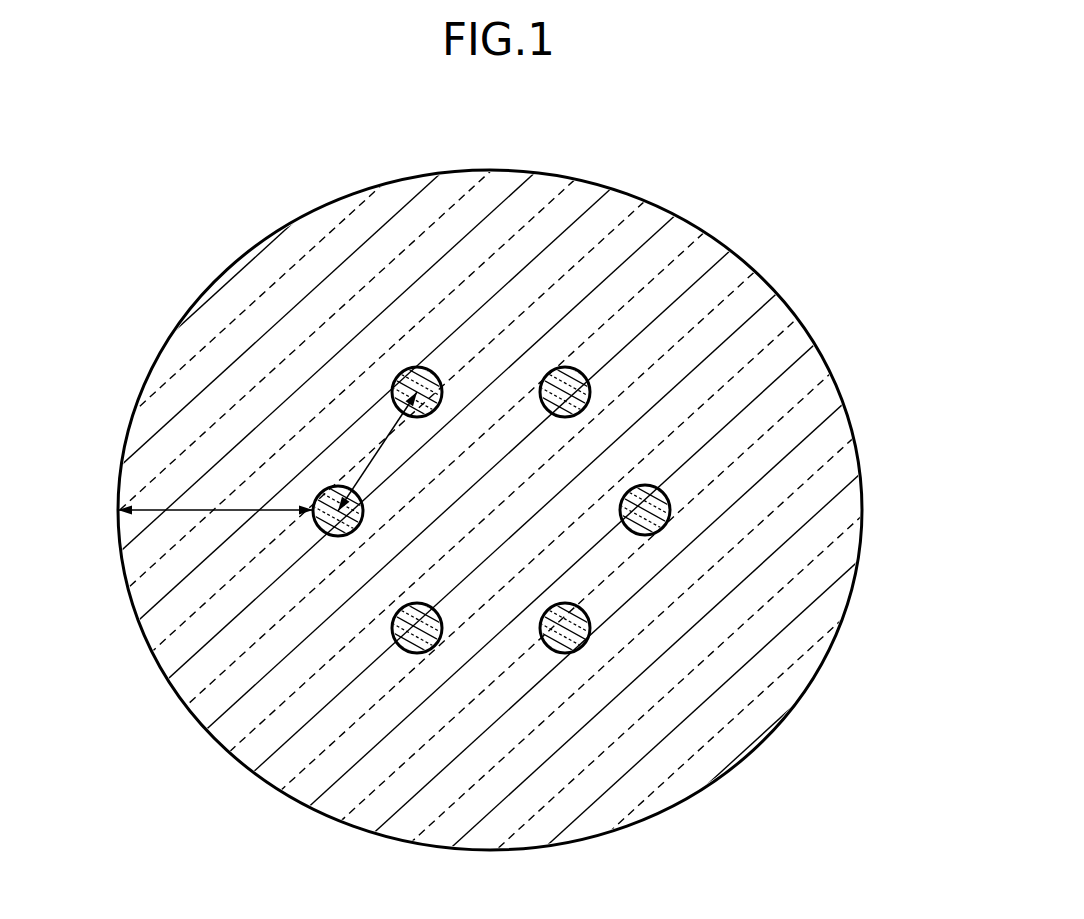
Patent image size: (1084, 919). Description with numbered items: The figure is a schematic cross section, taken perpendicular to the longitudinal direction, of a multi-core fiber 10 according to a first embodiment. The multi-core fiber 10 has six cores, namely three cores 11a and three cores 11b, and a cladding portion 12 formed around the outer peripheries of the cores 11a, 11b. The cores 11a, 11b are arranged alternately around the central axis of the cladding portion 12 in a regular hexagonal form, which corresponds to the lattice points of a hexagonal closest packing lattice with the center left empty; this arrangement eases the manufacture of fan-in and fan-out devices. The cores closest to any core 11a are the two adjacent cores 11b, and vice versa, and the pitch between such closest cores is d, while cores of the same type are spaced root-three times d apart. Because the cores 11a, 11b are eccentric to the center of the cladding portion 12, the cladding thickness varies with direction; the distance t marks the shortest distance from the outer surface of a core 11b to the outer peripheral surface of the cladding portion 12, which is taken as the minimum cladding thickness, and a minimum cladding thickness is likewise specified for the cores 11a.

The multi-core fiber 10 is at (752, 128).
The core 11a is at (421, 368).
The core 11b is at (568, 368).
The cladding portion 12 is at (752, 298).
The pitch d is at (367, 460).
The distance t is at (186, 514).